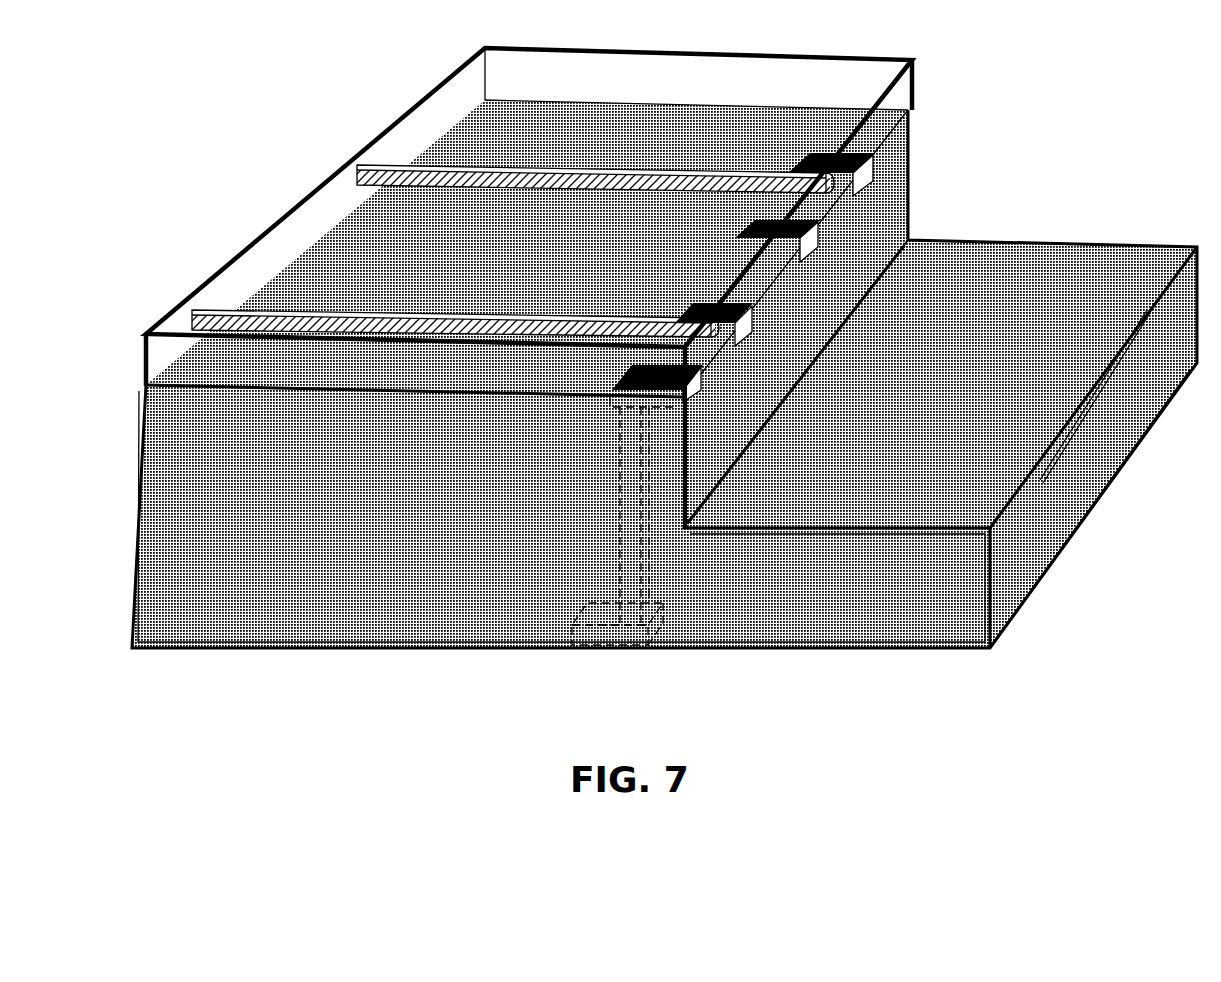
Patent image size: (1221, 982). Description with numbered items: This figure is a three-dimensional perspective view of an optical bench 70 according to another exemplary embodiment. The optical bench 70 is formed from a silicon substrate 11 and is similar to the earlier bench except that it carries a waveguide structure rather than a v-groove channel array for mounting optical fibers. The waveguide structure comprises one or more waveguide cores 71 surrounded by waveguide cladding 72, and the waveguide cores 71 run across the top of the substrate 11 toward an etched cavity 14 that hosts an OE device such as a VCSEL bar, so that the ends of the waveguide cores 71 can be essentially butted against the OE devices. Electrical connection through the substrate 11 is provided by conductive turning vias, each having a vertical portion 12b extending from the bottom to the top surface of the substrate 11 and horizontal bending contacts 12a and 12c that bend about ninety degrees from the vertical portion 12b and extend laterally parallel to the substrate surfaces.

The optical bench 70 is at (134, 471).
The silicon substrate 11 is at (195, 444).
The cavity 14 is at (986, 320).
The waveguide cores 71 is at (363, 163).
The horizontal portion 12a is at (637, 368).
The vertical portion 12b is at (630, 503).
The horizontal portion 12c is at (573, 633).
The waveguide cladding 72 is at (765, 77).